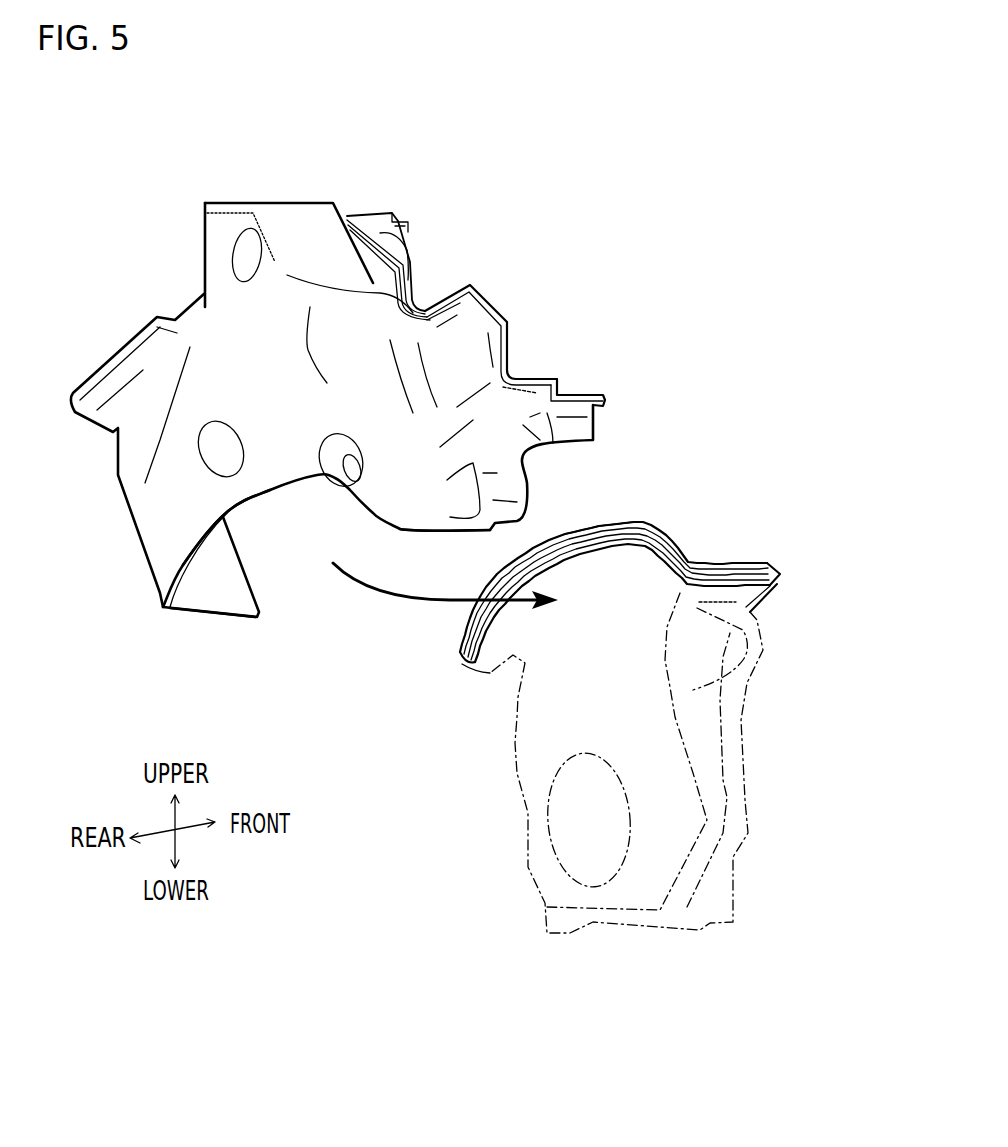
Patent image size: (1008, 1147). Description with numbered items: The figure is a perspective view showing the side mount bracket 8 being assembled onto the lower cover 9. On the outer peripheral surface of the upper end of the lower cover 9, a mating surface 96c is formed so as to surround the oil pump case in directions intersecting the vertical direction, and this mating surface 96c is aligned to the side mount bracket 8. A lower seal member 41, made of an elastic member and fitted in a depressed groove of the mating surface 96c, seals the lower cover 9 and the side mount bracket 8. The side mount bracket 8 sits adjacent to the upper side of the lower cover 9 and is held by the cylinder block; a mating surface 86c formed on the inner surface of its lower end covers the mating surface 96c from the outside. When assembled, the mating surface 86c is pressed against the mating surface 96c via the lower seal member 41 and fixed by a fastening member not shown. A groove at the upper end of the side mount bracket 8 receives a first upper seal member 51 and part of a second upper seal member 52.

The side mount bracket 8 is at (96, 545).
The lower cover 9 is at (481, 829).
The lower seal member 41 is at (530, 548).
The first upper seal member 51 is at (370, 215).
The second upper seal member 52 is at (400, 221).
The mating surface of the side mount bracket 86c is at (246, 527).
The mating surface of the lower cover 96c is at (580, 521).